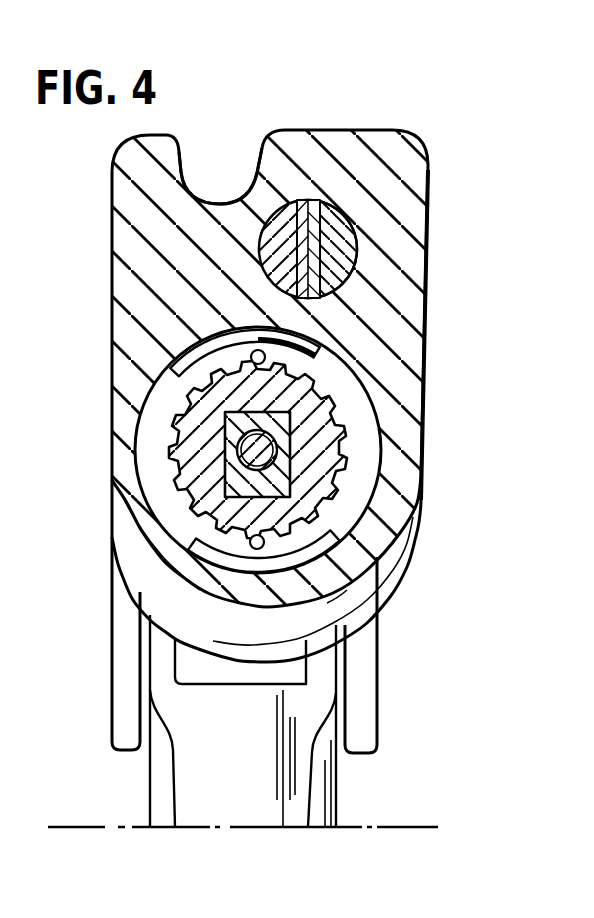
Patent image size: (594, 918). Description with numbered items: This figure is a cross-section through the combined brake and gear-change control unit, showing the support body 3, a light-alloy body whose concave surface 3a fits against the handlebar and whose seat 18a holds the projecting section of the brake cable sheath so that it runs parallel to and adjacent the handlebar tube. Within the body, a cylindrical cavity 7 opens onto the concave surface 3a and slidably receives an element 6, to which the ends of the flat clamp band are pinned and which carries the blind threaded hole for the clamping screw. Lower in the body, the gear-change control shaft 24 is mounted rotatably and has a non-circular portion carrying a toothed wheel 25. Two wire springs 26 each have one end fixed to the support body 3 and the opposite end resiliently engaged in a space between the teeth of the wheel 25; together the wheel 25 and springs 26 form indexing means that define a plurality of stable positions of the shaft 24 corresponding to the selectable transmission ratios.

The support body 3 is at (422, 189).
The concave surface 3a is at (330, 257).
The seat 18a is at (181, 161).
The element 6 is at (284, 222).
The cylindrical cavity 7 is at (333, 222).
The shaft 24 is at (296, 446).
The toothed wheel 25 is at (349, 462).
The wire springs 26 is at (307, 350).